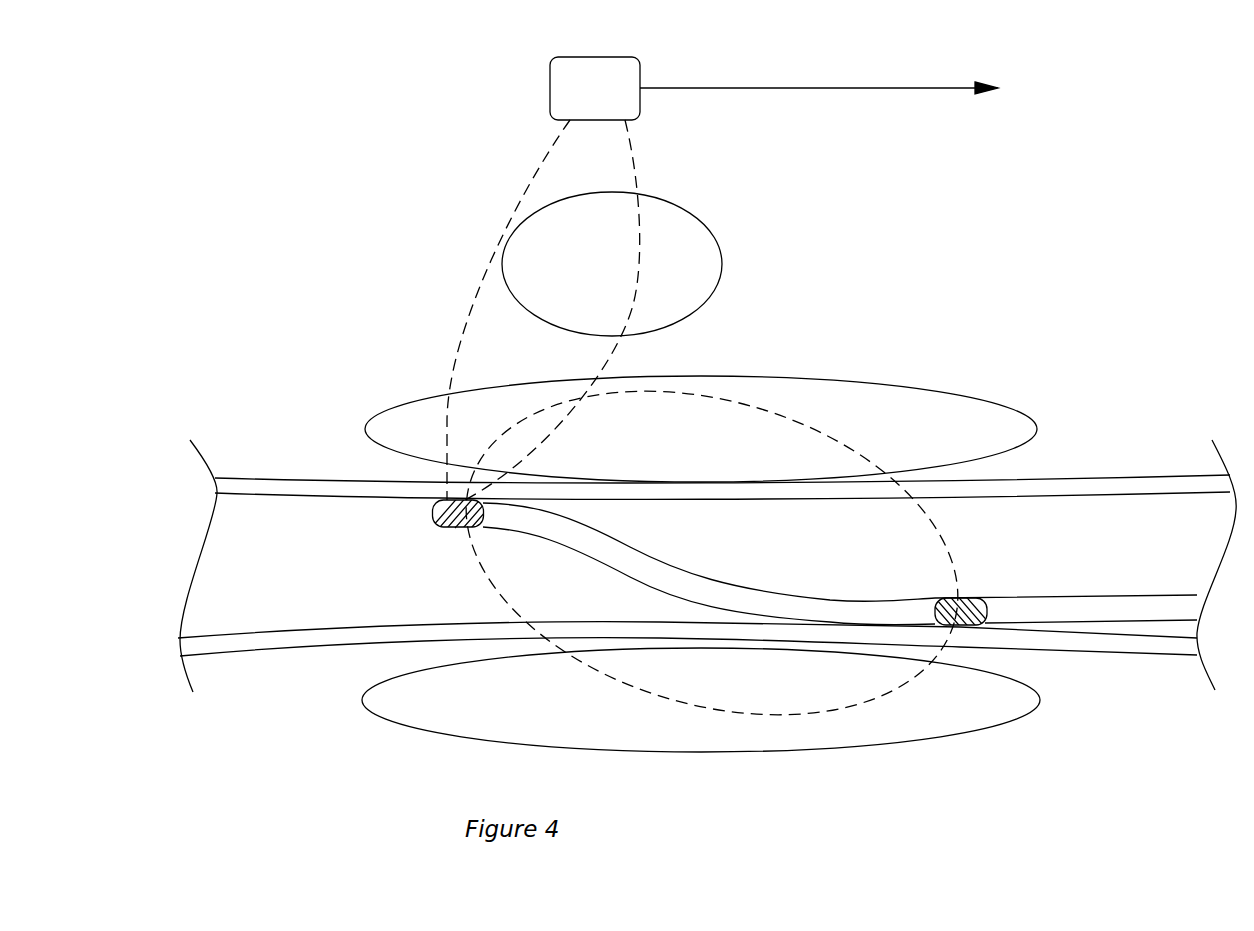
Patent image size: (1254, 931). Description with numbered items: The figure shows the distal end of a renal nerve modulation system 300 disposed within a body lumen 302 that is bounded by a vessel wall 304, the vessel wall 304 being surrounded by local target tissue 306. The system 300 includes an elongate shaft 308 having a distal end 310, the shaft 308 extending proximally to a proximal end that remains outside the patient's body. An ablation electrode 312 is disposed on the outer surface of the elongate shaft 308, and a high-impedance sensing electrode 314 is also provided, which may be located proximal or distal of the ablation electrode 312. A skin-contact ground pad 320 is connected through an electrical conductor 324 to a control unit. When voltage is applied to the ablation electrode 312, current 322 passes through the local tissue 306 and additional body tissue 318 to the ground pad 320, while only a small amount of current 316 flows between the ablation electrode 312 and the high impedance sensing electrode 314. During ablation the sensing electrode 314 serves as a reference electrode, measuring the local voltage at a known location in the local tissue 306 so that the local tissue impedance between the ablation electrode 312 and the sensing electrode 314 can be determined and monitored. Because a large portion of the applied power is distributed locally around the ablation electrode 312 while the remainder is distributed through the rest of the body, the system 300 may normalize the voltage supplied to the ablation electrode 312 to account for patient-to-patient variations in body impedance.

The renal nerve modulation system 300 is at (300, 187).
The body lumen 302 is at (298, 515).
The vessel wall 304 is at (300, 630).
The local target tissue 306 is at (895, 402).
The elongate shaft 308 is at (1118, 603).
The distal end 310 is at (432, 511).
The ablation electrode 312 is at (455, 527).
The sensing electrode 314 is at (985, 600).
The current 316 is at (934, 542).
The body tissue 318 is at (710, 263).
The skin-contact ground pad 320 is at (560, 97).
The current 322 is at (640, 183).
The electrical conductor 324 is at (800, 88).